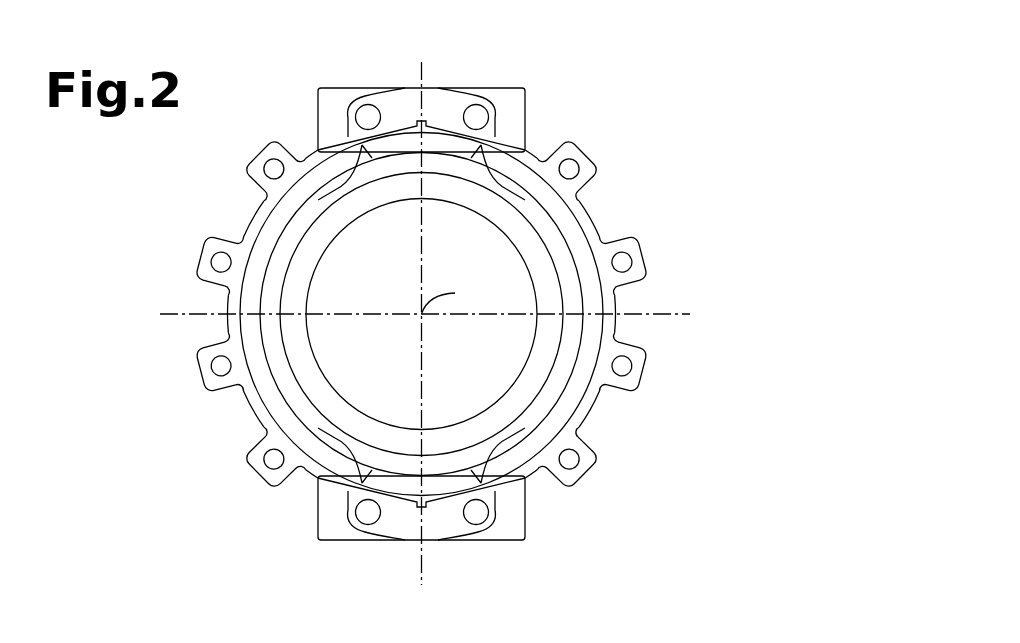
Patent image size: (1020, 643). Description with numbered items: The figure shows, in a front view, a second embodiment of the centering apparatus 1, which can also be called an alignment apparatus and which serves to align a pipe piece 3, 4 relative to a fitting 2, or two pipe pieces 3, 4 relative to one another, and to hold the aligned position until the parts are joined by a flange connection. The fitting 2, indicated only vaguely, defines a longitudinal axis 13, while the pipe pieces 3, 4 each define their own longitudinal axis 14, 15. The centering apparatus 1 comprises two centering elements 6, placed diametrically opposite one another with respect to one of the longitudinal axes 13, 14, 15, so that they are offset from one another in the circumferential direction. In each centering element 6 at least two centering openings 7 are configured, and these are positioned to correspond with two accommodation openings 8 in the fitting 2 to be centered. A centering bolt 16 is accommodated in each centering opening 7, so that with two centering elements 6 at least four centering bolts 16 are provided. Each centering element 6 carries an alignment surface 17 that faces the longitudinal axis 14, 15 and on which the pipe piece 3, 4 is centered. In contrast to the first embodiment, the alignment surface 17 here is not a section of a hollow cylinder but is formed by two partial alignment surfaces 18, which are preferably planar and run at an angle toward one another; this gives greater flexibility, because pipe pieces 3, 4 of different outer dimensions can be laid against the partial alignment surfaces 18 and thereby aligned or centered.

The centering apparatus 1 is at (598, 100).
The fitting 2 is at (665, 220).
The pipe piece 3 is at (547, 345).
The pipe piece 4 is at (421, 314).
The centering element 6 is at (433, 113).
The centering opening 7 is at (360, 120).
The accommodation opening 8 is at (573, 168).
The longitudinal axis 13 is at (455, 293).
The longitudinal axis 14 is at (421, 314).
The longitudinal axis 15 is at (421, 314).
The centering bolt 16 is at (478, 118).
The alignment surface 17 is at (412, 152).
The partial alignment surface 18 is at (262, 186).